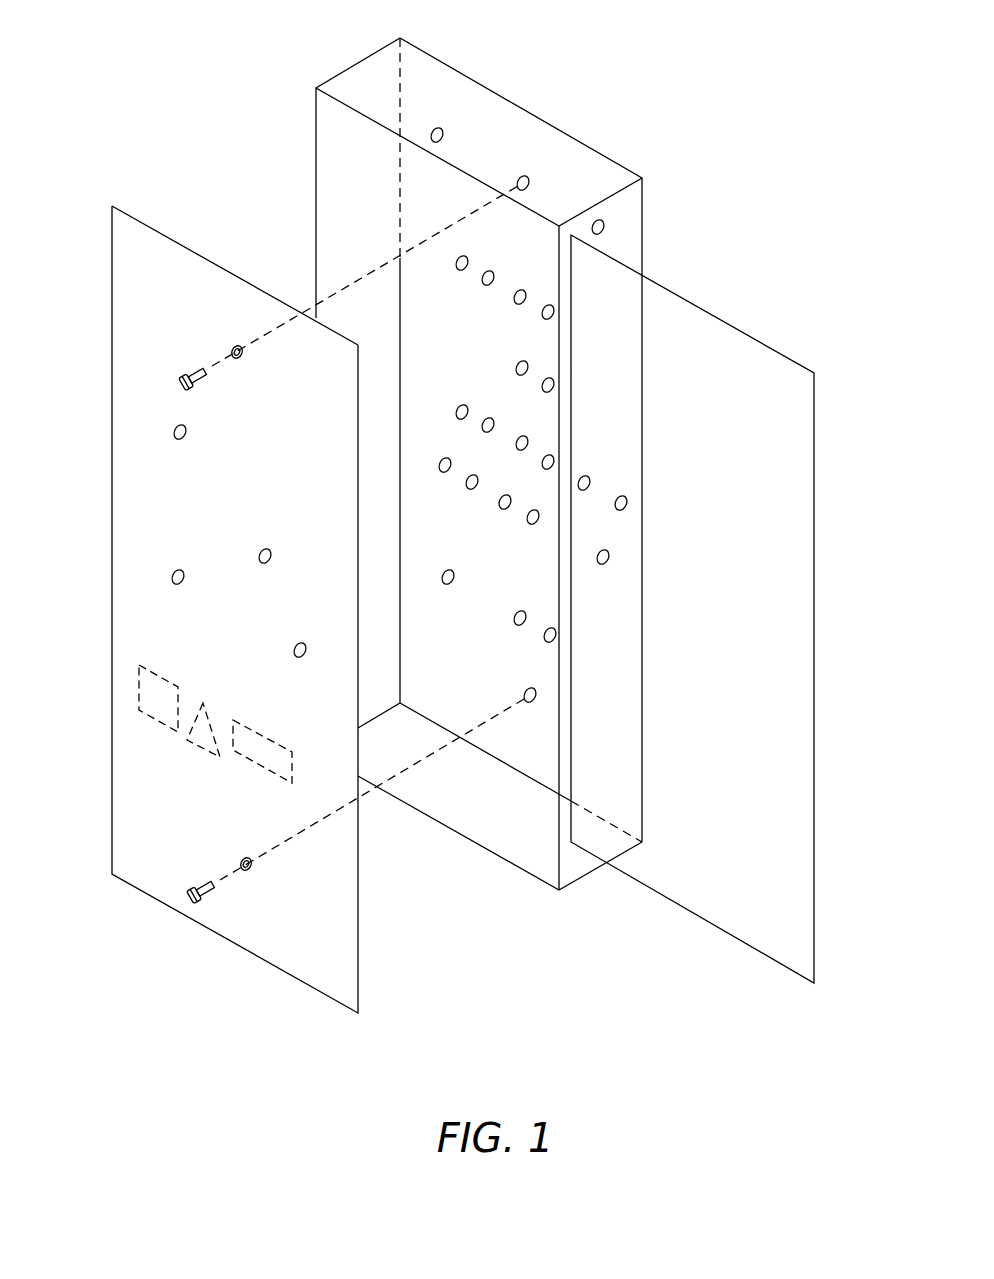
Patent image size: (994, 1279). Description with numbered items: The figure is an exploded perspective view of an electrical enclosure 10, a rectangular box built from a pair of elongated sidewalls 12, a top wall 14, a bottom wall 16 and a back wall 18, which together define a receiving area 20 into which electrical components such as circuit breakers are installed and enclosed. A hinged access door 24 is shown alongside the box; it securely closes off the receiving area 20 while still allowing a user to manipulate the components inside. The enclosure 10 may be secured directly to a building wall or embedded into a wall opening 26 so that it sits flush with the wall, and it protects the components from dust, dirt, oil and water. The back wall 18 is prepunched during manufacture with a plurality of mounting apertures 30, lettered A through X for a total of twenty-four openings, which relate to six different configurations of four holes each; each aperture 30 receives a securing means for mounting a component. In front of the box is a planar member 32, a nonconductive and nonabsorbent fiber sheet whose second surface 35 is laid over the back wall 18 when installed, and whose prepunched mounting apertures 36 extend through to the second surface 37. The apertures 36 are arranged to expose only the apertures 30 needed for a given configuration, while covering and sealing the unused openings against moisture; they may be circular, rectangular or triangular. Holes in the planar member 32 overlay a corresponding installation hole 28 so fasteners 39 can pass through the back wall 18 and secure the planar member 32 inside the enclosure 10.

The electrical enclosure 10 is at (121, 65).
The elongated sidewalls 12 is at (316, 165).
The top wall 14 is at (490, 133).
The bottom wall 16 is at (487, 838).
The back wall 18 is at (630, 500).
The receiving area 20 is at (400, 257).
The hinged access door 24 is at (814, 655).
The wall opening 26 is at (316, 87).
The installation hole 28 is at (527, 180).
The mounting apertures 30 is at (548, 305).
The planar member 32 is at (277, 972).
The second surface 35 is at (124, 333).
The mounting apertures 36 is at (185, 440).
The second surface 37 is at (195, 252).
The fasteners 39 is at (243, 358).